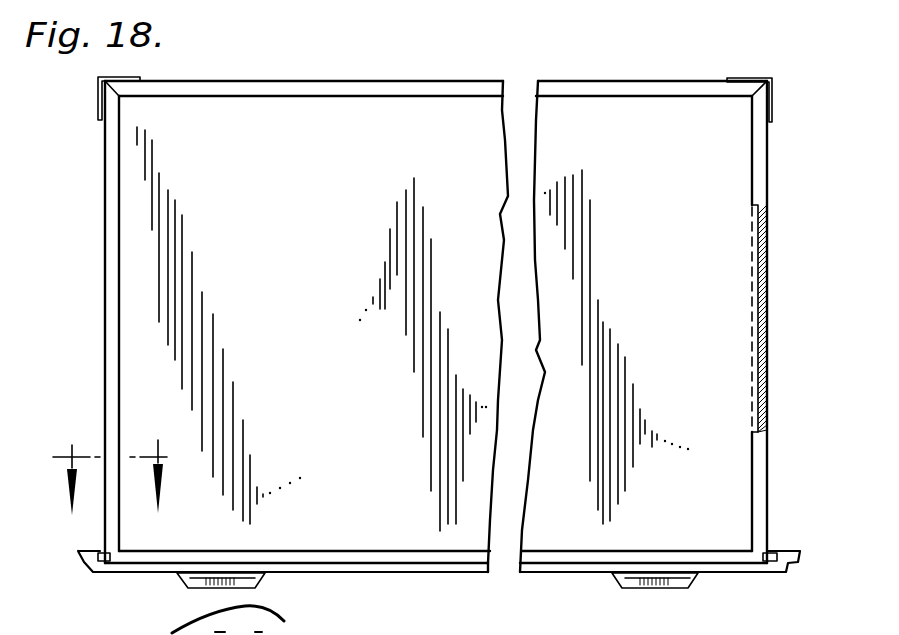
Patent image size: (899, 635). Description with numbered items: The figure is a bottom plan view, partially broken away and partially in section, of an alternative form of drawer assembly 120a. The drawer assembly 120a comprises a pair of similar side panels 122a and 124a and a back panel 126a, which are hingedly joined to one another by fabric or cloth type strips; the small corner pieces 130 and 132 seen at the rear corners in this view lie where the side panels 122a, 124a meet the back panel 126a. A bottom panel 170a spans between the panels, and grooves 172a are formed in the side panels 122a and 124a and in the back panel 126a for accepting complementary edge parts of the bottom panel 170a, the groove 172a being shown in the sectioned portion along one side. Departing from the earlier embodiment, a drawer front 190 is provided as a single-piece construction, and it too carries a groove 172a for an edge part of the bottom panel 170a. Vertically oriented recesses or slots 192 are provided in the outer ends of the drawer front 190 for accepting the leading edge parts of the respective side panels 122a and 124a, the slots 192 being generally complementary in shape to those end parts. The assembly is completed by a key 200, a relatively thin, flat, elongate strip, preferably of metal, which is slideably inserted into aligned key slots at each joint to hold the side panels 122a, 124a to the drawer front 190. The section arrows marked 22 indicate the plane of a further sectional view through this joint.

The drawer assembly 120a is at (92, 307).
The side panel 122a is at (104, 180).
The side panel 124a is at (769, 186).
The back panel 126a is at (342, 44).
The corner bracket 130 is at (100, 90).
The corner bracket 132 is at (754, 50).
The bottom panel 170a is at (336, 285).
The groove 172a is at (752, 272).
The drawer front 190 is at (350, 572).
The slot 192 is at (125, 554).
The key 200 is at (98, 551).
The section line 22 is at (112, 458).